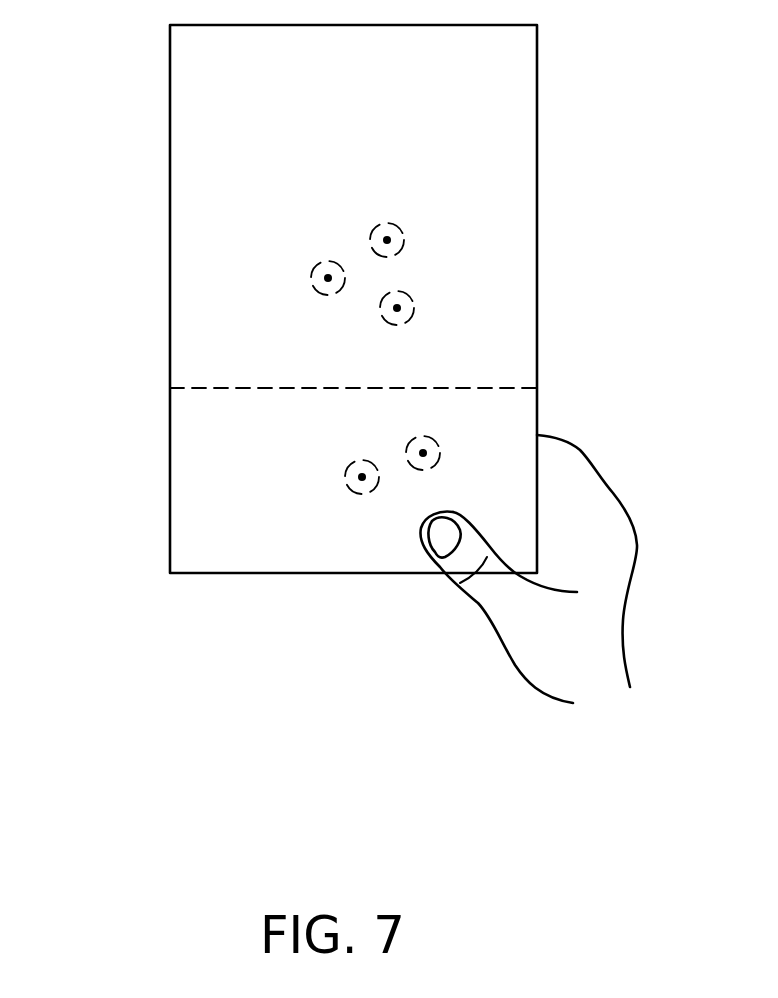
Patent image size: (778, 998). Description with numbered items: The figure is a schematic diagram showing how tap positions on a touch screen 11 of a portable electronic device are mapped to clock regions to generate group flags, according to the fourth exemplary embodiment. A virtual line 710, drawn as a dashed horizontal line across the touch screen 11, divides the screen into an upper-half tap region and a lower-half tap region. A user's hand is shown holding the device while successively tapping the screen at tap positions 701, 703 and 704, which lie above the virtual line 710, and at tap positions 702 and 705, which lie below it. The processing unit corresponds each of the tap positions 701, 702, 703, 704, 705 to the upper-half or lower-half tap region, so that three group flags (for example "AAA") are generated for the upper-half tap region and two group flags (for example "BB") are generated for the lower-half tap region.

The touch screen 11 is at (170, 168).
The tap position 701 is at (328, 276).
The tap position 702 is at (424, 452).
The tap position 703 is at (388, 239).
The tap position 704 is at (398, 307).
The tap position 705 is at (362, 477).
The virtual line 710 is at (247, 388).